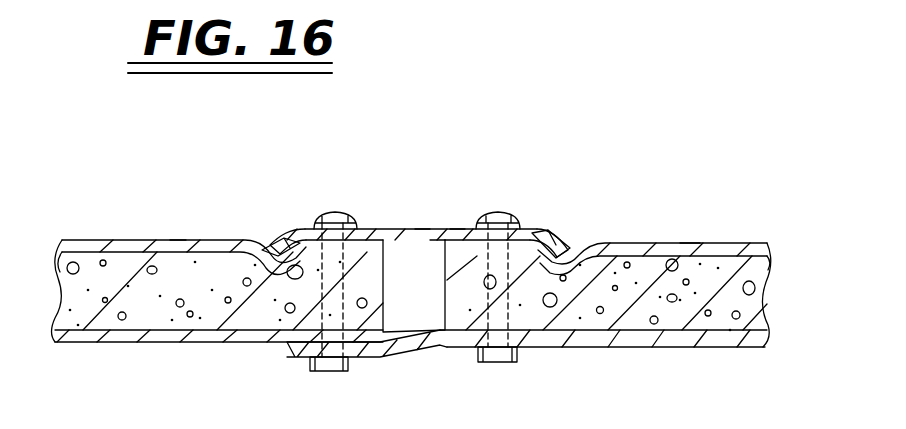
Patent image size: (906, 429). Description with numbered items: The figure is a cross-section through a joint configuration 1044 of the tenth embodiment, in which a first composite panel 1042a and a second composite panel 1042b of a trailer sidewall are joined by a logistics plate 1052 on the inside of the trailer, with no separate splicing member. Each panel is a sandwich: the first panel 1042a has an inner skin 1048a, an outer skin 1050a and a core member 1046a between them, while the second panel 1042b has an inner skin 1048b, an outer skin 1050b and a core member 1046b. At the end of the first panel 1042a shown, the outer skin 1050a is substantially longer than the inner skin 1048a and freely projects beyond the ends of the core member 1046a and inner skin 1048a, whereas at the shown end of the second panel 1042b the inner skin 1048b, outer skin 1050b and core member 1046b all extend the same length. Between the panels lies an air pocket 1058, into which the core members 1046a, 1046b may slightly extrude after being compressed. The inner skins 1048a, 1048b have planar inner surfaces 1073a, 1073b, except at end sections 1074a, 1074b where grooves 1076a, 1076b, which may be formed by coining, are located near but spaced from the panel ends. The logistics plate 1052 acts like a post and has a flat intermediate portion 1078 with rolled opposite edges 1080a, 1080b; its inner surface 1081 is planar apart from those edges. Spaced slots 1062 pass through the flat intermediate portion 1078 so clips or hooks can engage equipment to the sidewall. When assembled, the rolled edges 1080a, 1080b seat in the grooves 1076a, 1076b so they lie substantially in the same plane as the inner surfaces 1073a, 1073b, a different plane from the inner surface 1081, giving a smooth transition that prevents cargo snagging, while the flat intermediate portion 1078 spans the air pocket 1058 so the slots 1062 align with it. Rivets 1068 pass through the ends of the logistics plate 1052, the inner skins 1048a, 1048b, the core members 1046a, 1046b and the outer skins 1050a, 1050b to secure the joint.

The first composite panel 1042a is at (658, 347).
The second composite panel 1042b is at (103, 343).
The joint configuration 1044 is at (385, 143).
The core member 1046a is at (760, 266).
The core member 1046b is at (66, 290).
The inner skin 1048a is at (702, 252).
The inner skin 1048b is at (203, 250).
The outer skin 1050a is at (553, 340).
The outer skin 1050b is at (220, 335).
The logistics plate 1052 is at (438, 227).
The air pocket 1058 is at (416, 322).
The slots 1062 is at (417, 252).
The rivets 1068 is at (333, 367).
The inner surface 1073a is at (690, 243).
The inner surface 1073b is at (177, 240).
The end section 1074a is at (487, 233).
The end section 1074b is at (368, 237).
The groove 1076a is at (563, 257).
The groove 1076b is at (250, 247).
The flat intermediate portion 1078 is at (458, 228).
The rolled edge 1080a is at (545, 243).
The rolled edge 1080b is at (292, 233).
The inner surface 1081 is at (420, 227).